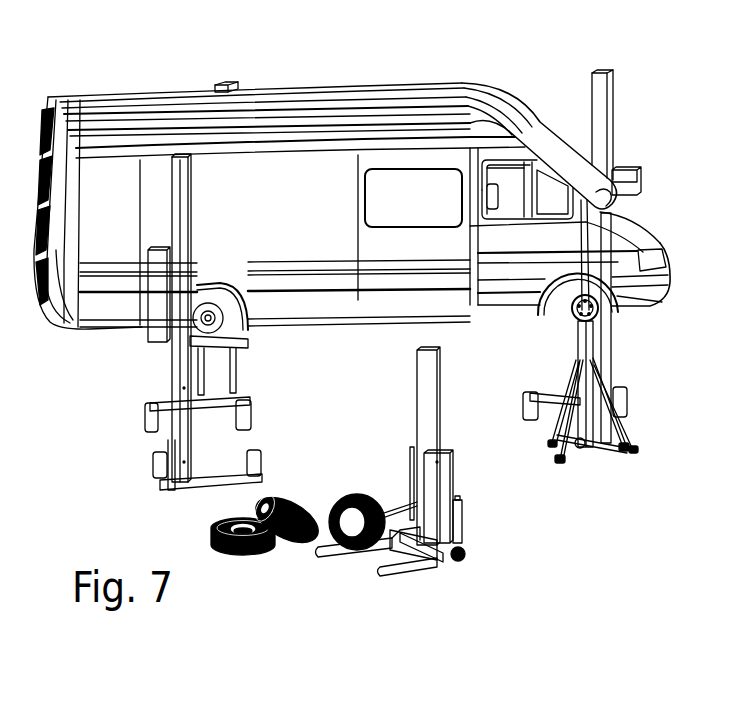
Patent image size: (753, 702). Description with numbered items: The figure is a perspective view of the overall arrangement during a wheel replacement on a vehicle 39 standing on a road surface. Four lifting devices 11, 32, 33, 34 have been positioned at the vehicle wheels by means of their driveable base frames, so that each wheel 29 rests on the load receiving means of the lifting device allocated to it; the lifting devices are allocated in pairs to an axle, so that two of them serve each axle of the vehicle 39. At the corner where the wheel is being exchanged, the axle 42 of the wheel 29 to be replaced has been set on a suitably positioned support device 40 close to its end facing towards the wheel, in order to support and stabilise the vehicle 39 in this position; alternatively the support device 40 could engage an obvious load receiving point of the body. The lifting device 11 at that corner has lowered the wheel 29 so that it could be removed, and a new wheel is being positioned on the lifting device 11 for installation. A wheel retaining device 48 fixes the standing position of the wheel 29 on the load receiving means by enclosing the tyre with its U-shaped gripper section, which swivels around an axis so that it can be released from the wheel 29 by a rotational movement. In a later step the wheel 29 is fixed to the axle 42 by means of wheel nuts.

The lifting device 11 is at (473, 473).
The wheel 29 is at (353, 492).
The lifting device 32 is at (630, 110).
The lifting device 33 is at (214, 70).
The lifting device 34 is at (145, 372).
The vehicle 39 is at (331, 70).
The support device 40 is at (625, 462).
The axle 42 is at (558, 320).
The wheel retaining device 48 is at (390, 485).